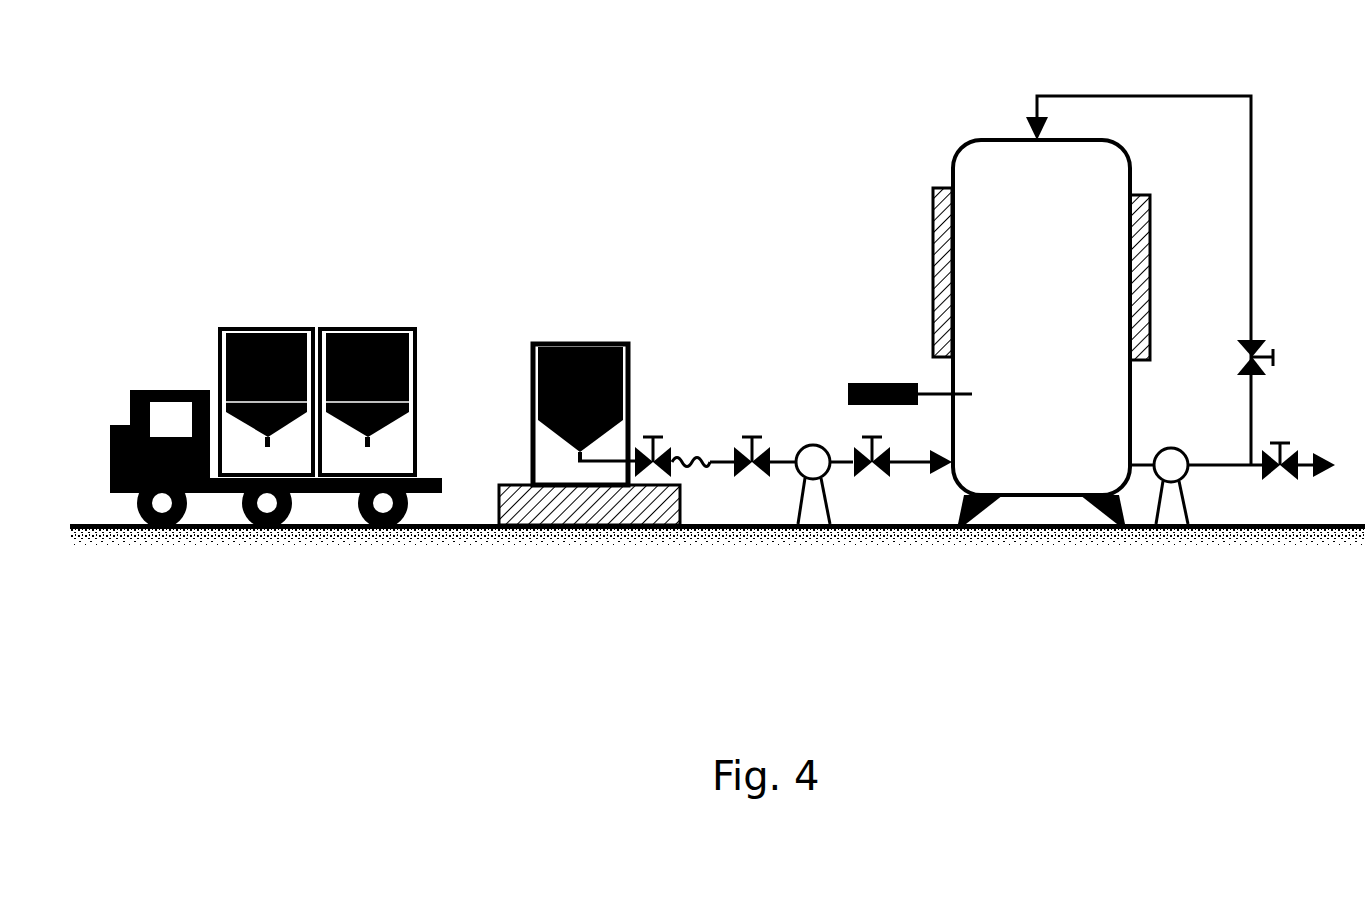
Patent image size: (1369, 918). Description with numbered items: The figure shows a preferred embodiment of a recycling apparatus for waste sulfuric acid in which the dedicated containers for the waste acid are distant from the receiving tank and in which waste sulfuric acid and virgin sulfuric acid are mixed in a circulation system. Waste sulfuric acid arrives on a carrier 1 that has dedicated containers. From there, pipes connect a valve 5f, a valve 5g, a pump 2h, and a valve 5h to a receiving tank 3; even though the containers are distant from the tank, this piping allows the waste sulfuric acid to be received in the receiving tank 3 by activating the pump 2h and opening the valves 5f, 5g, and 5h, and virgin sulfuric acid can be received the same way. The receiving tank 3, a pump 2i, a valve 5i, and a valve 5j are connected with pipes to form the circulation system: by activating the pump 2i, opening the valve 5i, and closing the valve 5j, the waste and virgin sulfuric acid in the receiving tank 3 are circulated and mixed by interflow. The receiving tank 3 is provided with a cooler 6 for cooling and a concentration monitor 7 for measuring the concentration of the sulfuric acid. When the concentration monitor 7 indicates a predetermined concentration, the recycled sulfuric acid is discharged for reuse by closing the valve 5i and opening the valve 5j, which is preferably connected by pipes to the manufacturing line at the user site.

The carrier 1 is at (282, 327).
The pump 2h is at (815, 512).
The pump 2i is at (1170, 515).
The receiving tank 3 is at (1033, 450).
The valve 5f is at (653, 437).
The valve 5g is at (752, 437).
The valve 5h is at (877, 467).
The valve 5i is at (1252, 343).
The valve 5j is at (1283, 473).
The cooler 6 is at (1127, 213).
The concentration monitor 7 is at (863, 383).